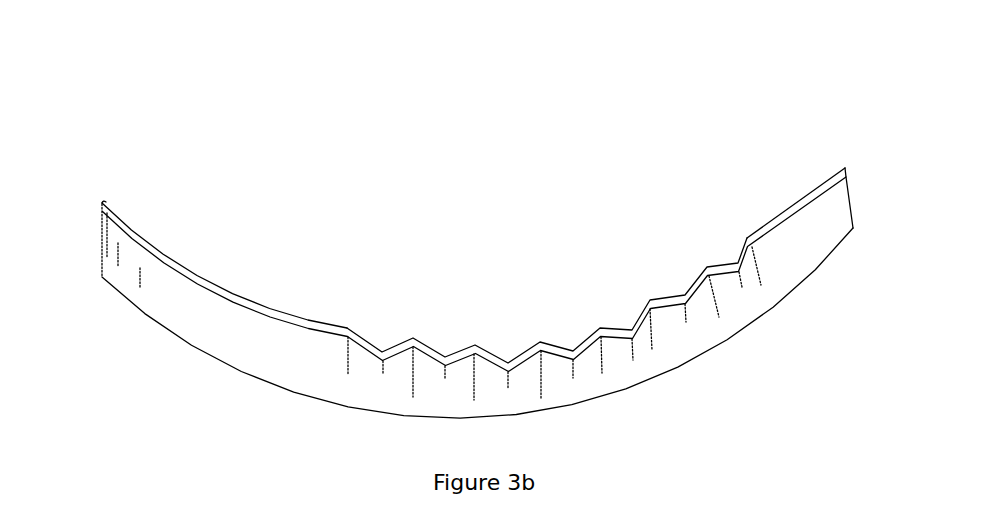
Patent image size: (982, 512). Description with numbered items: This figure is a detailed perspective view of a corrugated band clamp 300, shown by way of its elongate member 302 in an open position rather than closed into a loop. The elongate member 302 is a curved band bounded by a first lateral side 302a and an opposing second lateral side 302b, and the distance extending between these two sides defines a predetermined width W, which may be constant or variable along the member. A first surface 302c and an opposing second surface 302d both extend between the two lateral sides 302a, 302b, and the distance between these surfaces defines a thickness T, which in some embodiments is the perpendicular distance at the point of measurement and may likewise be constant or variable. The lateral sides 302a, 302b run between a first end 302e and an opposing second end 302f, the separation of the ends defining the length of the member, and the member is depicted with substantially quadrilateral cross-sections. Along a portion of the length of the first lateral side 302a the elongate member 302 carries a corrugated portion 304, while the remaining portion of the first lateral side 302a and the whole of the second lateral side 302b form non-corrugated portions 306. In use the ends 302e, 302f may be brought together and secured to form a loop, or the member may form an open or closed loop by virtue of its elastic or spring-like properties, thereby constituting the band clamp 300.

The corrugated band clamp 300 is at (728, 84).
The elongate member 302 is at (797, 250).
The first lateral side 302a is at (797, 198).
The second lateral side 302b is at (633, 385).
The first surface 302c is at (145, 237).
The second surface 302d is at (303, 368).
The first end 302e is at (100, 223).
The second end 302f is at (854, 205).
The corrugated portion 304 is at (553, 343).
The non-corrugated portion 306 is at (277, 308).
The thickness T is at (165, 310).
The width W is at (238, 305).